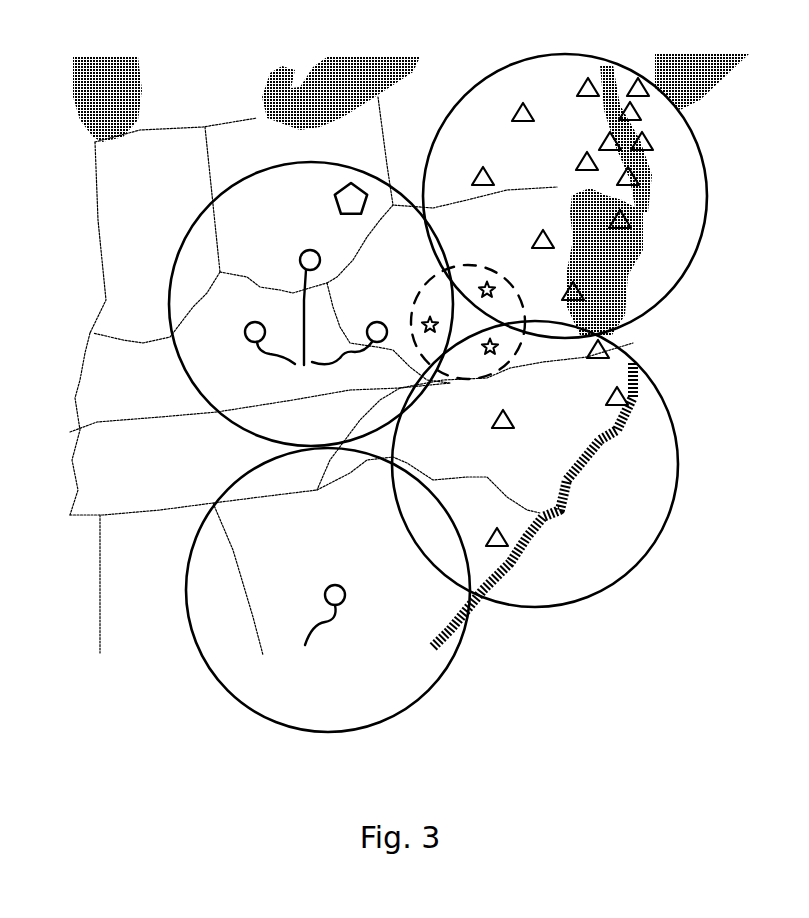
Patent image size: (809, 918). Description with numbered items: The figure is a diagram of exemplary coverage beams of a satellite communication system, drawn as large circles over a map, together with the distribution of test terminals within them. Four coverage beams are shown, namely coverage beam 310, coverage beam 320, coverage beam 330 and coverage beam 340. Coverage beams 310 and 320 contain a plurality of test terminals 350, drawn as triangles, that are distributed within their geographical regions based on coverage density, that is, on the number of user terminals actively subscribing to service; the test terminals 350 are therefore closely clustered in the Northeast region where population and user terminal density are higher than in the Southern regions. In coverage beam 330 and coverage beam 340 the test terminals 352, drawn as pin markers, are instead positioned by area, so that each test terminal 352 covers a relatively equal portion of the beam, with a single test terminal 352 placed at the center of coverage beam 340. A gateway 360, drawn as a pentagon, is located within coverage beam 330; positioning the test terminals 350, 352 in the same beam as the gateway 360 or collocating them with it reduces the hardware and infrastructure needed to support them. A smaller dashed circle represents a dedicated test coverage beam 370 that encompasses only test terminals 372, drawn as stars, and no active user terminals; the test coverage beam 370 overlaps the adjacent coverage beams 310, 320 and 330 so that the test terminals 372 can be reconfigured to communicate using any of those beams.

The coverage beam 310 is at (673, 500).
The coverage beam 320 is at (707, 232).
The coverage beam 330 is at (192, 227).
The coverage beam 340 is at (210, 665).
The test terminals 350 is at (523, 103).
The test terminals 352 is at (316, 458).
The gateway 360 is at (337, 197).
The test coverage beam 370 is at (482, 382).
The test terminals 372 is at (428, 318).